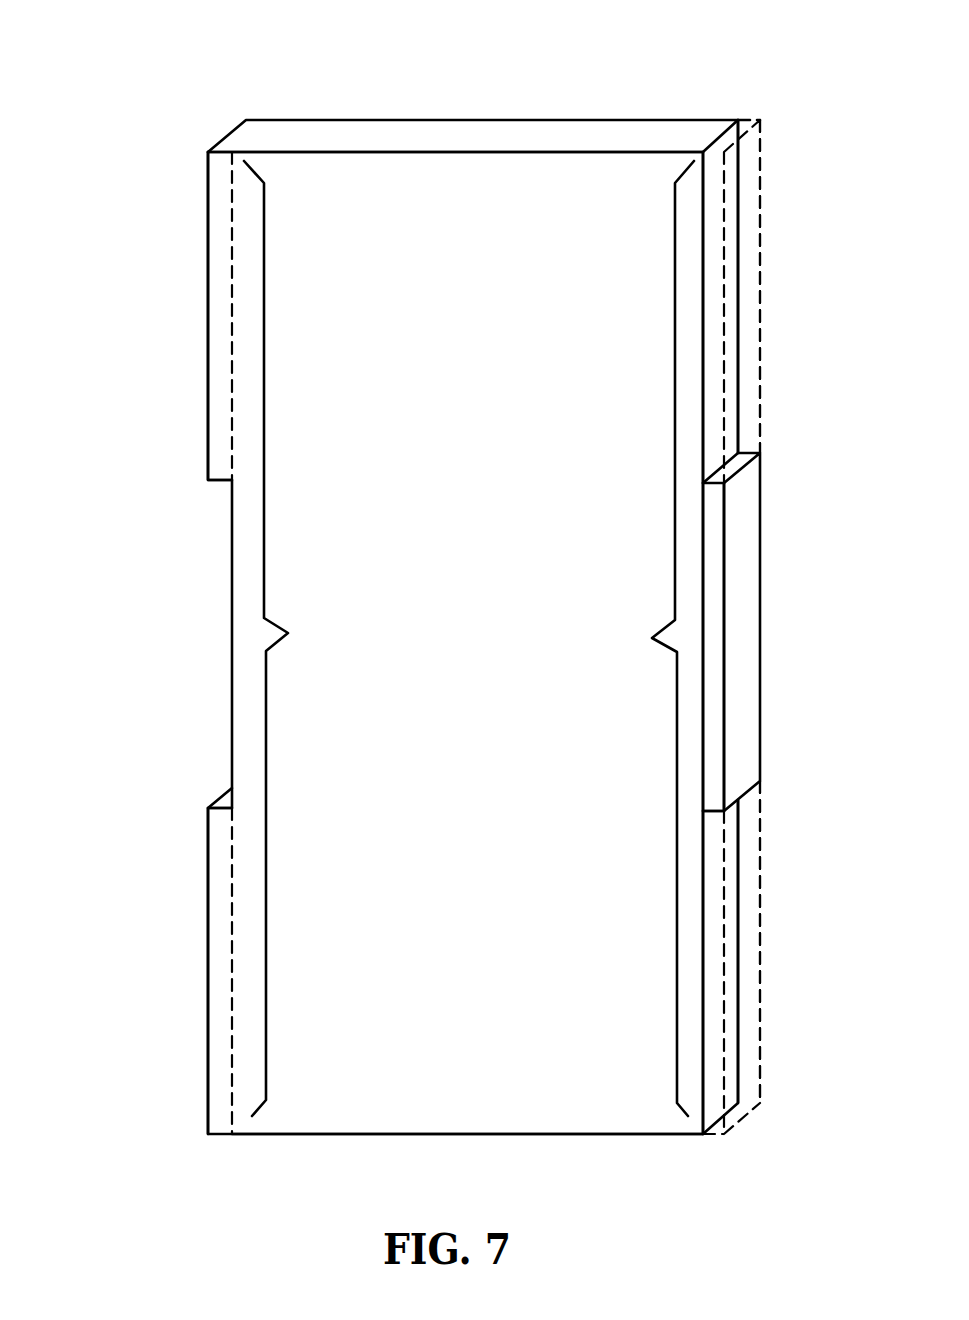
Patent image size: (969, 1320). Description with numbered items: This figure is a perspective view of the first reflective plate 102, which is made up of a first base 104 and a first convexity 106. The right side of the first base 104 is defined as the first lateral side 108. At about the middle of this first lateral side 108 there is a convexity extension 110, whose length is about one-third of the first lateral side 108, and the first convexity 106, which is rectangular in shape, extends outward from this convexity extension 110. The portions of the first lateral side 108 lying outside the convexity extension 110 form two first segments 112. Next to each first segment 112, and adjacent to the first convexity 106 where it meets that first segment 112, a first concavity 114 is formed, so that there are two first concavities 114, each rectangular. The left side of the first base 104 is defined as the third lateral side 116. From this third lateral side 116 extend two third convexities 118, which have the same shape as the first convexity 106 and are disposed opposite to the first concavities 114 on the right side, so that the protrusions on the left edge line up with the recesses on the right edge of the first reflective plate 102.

The first reflective plate 102 is at (447, 62).
The first base 104 is at (582, 223).
The first convexity 106 is at (715, 588).
The first lateral side 108 is at (641, 638).
The convexity extension 110 is at (705, 718).
The first segment 112 is at (705, 240).
The first concavity 114 is at (750, 337).
The third lateral side 116 is at (299, 638).
The third convexity 118 is at (218, 272).